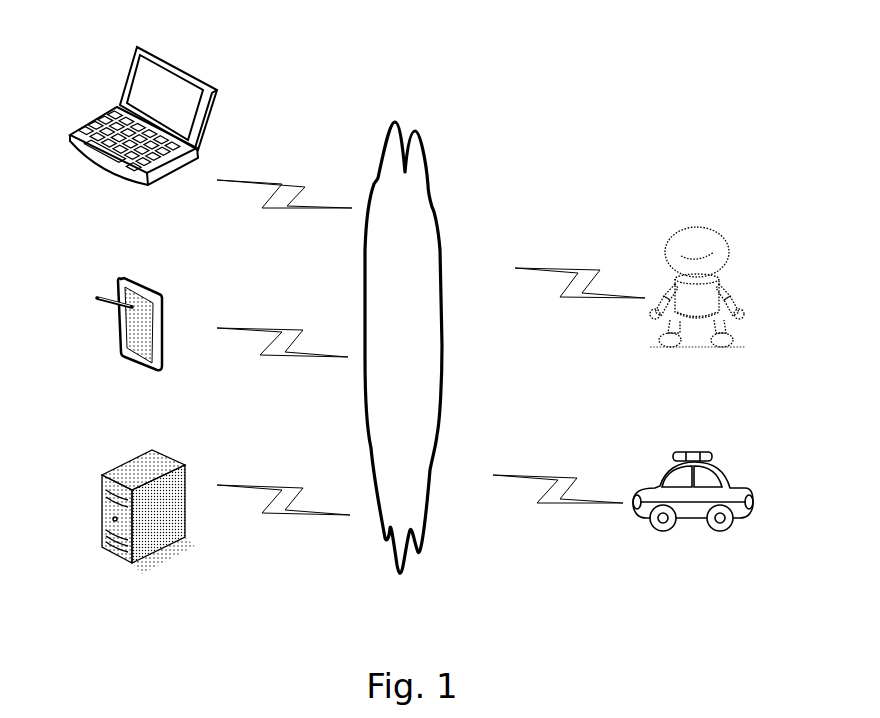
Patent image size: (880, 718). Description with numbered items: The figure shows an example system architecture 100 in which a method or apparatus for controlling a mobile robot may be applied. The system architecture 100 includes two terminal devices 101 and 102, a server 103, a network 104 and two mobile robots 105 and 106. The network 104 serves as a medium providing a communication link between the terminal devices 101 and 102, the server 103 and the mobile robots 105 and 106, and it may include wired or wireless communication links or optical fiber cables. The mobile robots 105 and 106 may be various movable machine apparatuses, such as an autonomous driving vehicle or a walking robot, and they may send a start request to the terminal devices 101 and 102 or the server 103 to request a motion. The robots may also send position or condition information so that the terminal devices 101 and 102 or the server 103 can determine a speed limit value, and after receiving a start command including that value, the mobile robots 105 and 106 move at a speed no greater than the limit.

The system architecture 100 is at (593, 36).
The terminal device 101 is at (143, 136).
The terminal device 102 is at (129, 342).
The server 103 is at (148, 521).
The network 104 is at (403, 347).
The mobile robot 105 is at (693, 508).
The mobile robot 106 is at (697, 302).